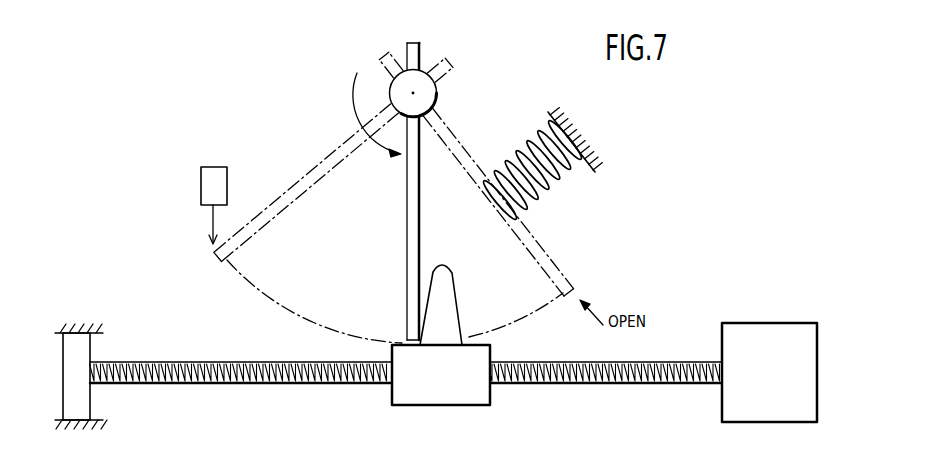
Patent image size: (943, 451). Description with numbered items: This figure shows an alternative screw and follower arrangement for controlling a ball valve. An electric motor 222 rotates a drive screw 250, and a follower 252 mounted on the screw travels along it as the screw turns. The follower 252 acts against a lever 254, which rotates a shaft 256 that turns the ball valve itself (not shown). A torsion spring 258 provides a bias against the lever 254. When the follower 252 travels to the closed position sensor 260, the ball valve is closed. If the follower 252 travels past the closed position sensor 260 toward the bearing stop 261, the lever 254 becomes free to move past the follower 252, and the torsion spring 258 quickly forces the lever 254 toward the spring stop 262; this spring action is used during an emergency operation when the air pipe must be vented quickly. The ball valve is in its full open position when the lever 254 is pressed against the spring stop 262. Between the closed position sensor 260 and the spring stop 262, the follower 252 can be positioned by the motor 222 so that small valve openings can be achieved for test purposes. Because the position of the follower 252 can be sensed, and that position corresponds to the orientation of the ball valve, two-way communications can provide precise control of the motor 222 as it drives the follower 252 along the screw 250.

The electric motor 222 is at (757, 323).
The drive screw 250 is at (278, 383).
The follower 252 is at (435, 390).
The lever 254 is at (409, 220).
The pivot 256 is at (440, 98).
The torsion spring 258 is at (352, 98).
The closed position sensor 260 is at (201, 170).
The bearing stop 261 is at (90, 395).
The spring stop 262 is at (553, 180).